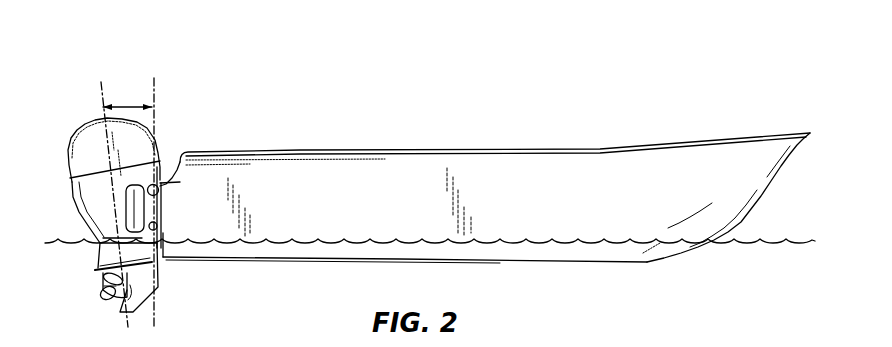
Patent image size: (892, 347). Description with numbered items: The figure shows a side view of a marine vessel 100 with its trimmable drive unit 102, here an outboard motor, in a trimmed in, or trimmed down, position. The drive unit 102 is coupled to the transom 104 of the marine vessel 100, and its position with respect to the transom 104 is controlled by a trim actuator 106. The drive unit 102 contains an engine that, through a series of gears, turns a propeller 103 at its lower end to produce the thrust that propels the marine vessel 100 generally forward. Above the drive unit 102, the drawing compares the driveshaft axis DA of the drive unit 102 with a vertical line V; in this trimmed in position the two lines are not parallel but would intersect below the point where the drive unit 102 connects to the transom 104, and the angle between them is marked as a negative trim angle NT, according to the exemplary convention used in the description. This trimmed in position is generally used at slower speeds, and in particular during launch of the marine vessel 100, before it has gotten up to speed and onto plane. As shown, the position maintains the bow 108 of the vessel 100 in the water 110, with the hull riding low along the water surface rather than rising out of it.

The marine vessel 100 is at (630, 148).
The drive unit 102 is at (78, 128).
The propeller 103 is at (103, 293).
The transom 104 is at (166, 232).
The trim actuator 106 is at (158, 214).
The bow 108 is at (758, 195).
The water 110 is at (780, 245).
The negative trim angle NT is at (131, 103).
The driveshaft axis DA is at (114, 196).
The vertical line V is at (155, 103).